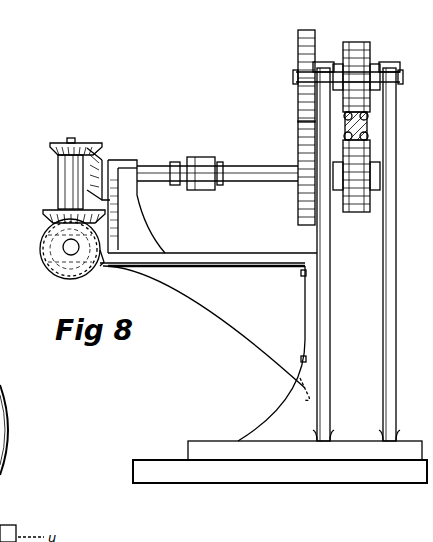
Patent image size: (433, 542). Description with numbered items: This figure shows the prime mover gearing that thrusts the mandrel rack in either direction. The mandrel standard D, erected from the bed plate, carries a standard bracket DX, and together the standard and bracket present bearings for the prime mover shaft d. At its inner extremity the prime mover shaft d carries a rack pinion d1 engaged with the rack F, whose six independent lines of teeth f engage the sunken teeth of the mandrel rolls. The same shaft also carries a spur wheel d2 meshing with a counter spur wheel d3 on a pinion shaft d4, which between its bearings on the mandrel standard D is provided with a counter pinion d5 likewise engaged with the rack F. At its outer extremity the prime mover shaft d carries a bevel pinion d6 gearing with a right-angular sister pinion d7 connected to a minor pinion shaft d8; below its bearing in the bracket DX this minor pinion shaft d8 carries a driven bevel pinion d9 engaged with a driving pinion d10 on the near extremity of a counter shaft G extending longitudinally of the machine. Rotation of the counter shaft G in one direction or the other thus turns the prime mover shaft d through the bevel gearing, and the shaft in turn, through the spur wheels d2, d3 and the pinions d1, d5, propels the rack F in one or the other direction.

The mandrel standard D is at (330, 302).
The standard bracket DX is at (208, 347).
The prime mover shaft d is at (238, 172).
The rack pinion d1 is at (400, 77).
The spur wheel d2 is at (299, 218).
The counter spur wheel d3 is at (298, 60).
The pinion shaft d4 is at (366, 213).
The counter pinion d5 is at (370, 46).
The bevel pinion d6 is at (105, 150).
The sister pinion d7 is at (50, 144).
The minor pinion shaft d8 is at (72, 138).
The driven bevel pinion d9 is at (48, 212).
The driving pinion d10 is at (48, 254).
The counter shaft G is at (69, 252).
The rack F is at (370, 124).
The teeth f is at (368, 136).